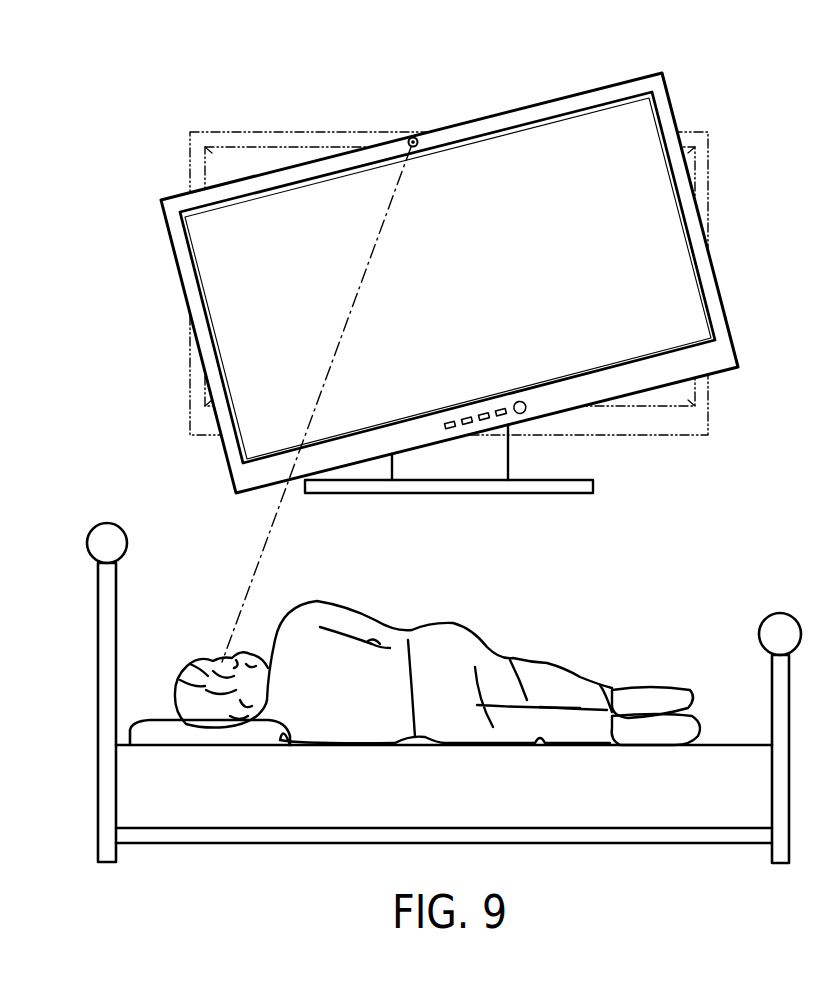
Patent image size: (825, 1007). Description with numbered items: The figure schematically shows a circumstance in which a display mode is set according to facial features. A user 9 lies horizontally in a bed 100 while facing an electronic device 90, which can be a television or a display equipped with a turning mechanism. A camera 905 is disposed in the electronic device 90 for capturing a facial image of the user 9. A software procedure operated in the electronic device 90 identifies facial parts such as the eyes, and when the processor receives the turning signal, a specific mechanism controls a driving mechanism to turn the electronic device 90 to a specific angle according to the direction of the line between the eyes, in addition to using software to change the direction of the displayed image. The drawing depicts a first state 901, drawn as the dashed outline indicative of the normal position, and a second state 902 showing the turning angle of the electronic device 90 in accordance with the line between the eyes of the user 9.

The user 9 is at (180, 686).
The electronic device 90 is at (718, 291).
The bed 100 is at (145, 788).
The first state 901 is at (708, 178).
The second state 902 is at (578, 74).
The camera 905 is at (411, 138).